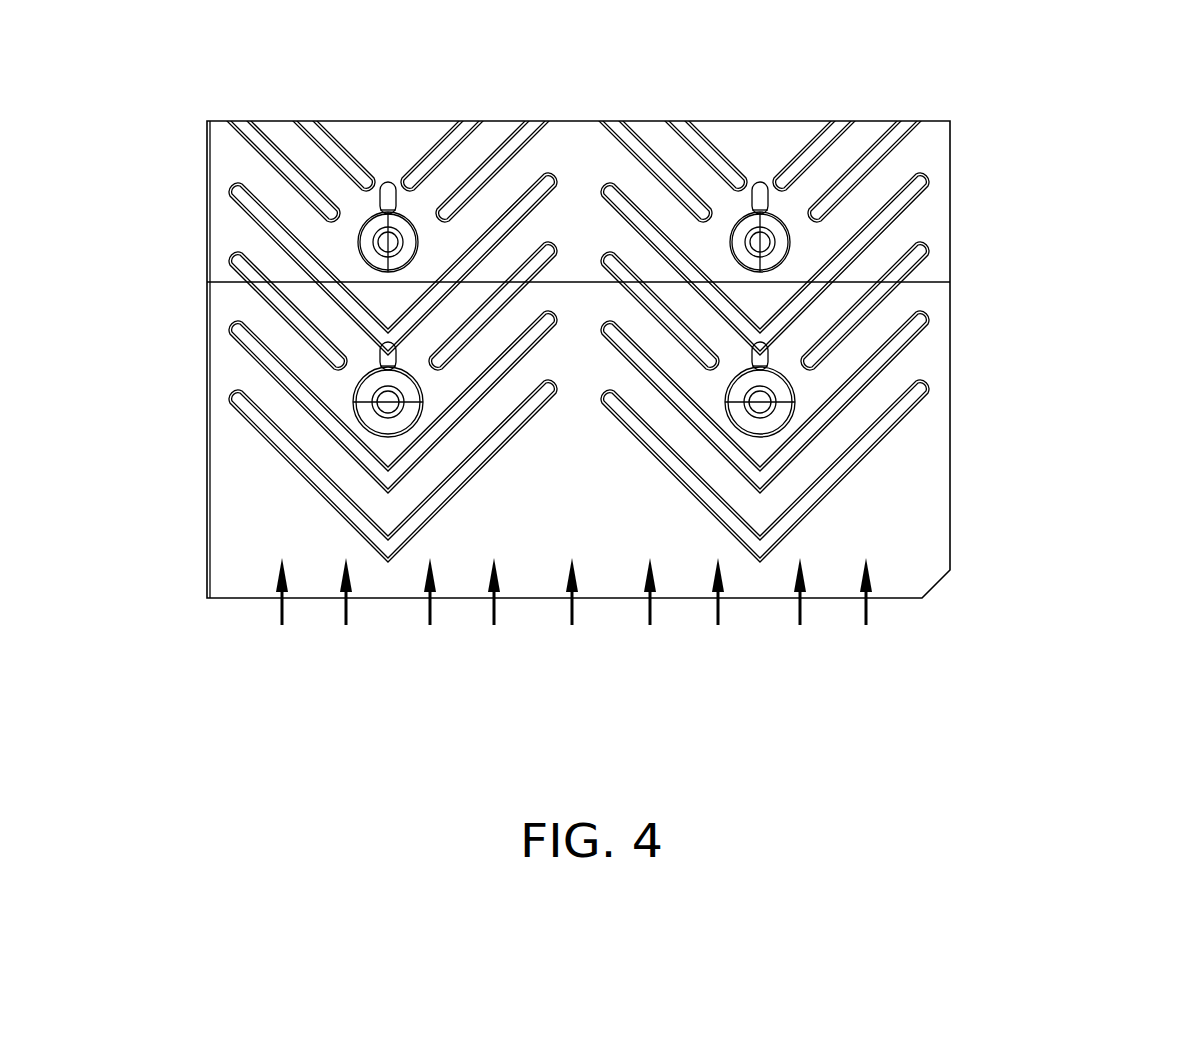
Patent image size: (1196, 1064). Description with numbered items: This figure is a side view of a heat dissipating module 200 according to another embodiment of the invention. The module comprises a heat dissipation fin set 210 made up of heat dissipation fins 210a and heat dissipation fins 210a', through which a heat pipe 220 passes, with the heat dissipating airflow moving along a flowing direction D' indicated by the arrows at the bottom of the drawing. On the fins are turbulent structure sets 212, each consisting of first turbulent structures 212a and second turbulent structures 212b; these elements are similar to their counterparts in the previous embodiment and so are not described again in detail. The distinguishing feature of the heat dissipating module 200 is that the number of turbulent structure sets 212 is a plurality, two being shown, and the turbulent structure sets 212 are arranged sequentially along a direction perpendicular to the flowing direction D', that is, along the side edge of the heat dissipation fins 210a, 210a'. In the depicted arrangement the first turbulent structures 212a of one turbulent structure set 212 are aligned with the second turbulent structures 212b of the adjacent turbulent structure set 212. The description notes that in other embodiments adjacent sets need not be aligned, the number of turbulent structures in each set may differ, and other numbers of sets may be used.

The heat dissipating module 200 is at (1189, 727).
The heat dissipation fin set 210 is at (636, 394).
The heat dissipation fin 210a is at (634, 440).
The heat dissipation fin 210a' is at (633, 201).
The turbulent structure set 212 is at (580, 364).
The first turbulent structure 212a is at (671, 213).
The second turbulent structure 212b is at (476, 213).
The heat pipe 220 is at (389, 402).
The flowing direction of the heat dissipating airflow D' is at (555, 620).